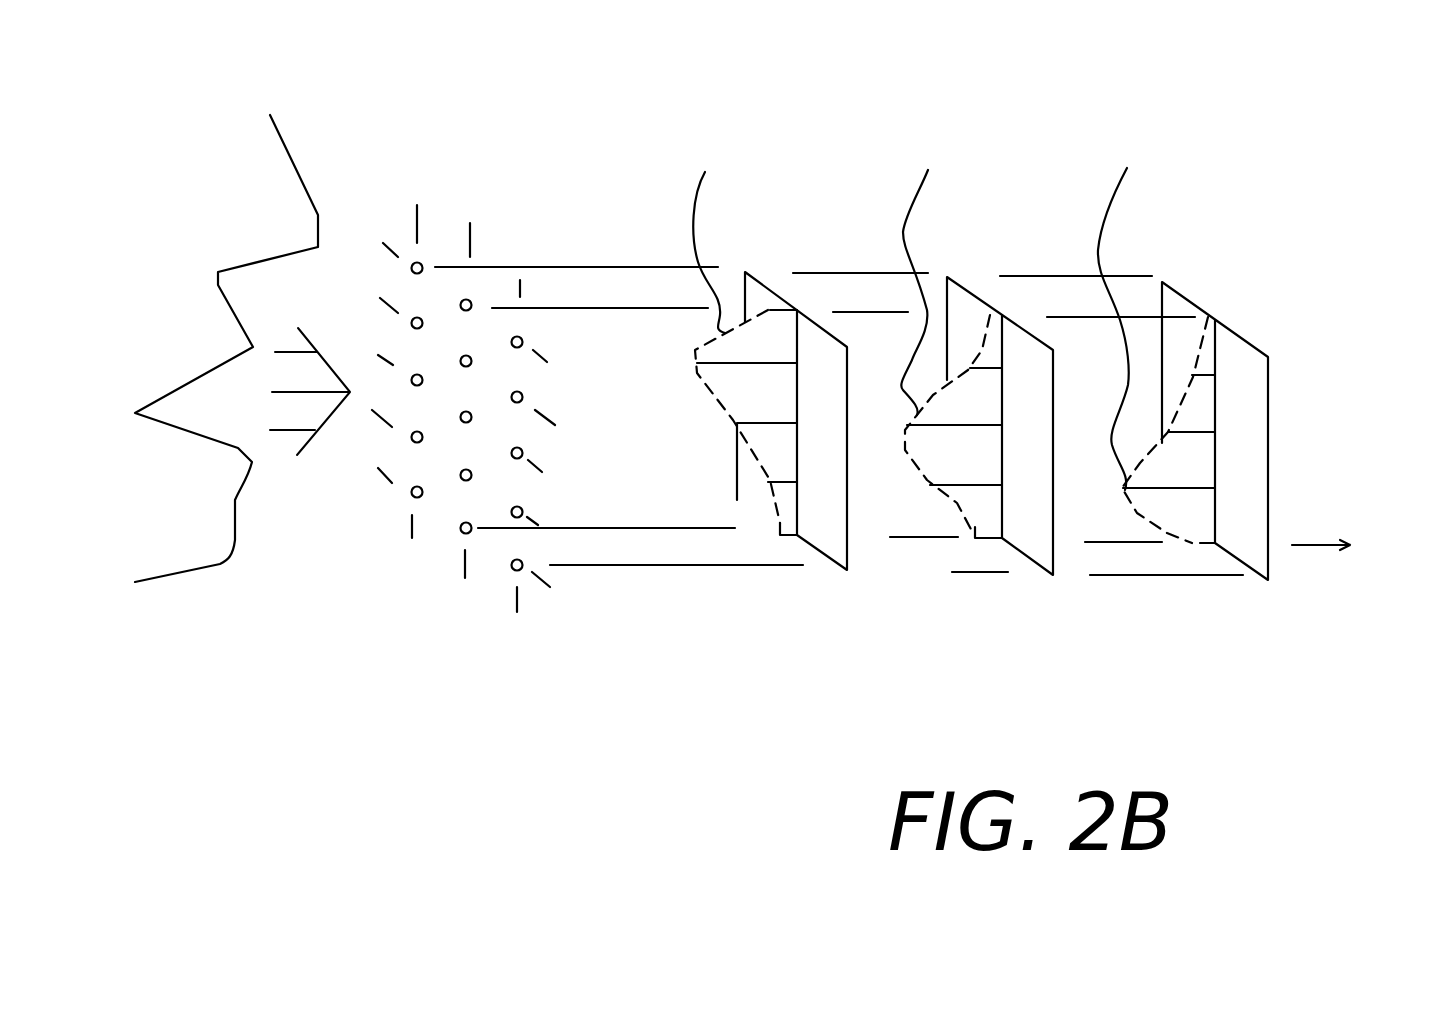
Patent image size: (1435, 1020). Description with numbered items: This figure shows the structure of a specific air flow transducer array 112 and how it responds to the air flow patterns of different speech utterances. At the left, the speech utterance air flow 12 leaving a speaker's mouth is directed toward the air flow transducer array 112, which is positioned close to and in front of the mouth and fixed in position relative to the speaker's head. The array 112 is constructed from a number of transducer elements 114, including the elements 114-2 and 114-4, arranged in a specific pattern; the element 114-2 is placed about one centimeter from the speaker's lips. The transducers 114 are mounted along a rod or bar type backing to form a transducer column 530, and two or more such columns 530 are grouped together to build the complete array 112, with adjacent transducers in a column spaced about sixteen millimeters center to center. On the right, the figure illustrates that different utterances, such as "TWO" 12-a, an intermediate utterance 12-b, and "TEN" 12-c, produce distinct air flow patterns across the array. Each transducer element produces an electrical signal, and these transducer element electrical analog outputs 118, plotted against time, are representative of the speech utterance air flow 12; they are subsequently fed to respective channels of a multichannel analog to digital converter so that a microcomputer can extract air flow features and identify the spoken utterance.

The speech utterance air flow 12 is at (290, 438).
The air flow transducer array 112 is at (520, 400).
The transducer column 530 is at (471, 214).
The transducer elements 114 is at (540, 516).
The transducer element 114-2 is at (472, 361).
The transducer element 114-4 is at (472, 475).
The transducer element electrical analog outputs 118 is at (930, 486).
The speech utterance "TWO" 12-a is at (770, 332).
The speech utterance air flow 12-b is at (977, 352).
The speech utterance "TEN" 12-c is at (1183, 338).